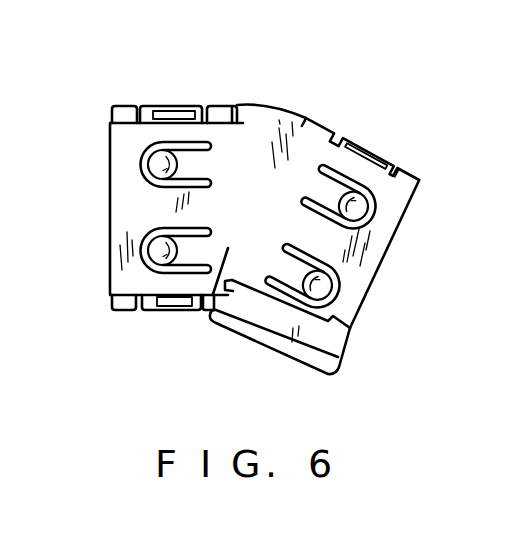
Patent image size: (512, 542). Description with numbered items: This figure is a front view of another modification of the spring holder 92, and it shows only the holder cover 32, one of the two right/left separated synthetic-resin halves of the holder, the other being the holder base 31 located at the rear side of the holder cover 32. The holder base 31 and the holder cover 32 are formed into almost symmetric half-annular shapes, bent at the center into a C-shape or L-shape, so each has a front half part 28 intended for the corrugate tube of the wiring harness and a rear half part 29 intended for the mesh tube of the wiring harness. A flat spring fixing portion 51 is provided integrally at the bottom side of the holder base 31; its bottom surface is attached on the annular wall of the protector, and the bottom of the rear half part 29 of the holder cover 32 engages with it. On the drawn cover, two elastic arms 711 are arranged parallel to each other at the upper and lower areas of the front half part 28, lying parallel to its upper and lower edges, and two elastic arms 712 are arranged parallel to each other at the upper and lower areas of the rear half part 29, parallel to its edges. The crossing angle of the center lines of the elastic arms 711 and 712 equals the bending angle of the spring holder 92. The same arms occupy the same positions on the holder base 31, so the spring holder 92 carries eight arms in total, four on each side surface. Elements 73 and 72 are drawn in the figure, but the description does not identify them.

The spring holder 92 is at (388, 46).
The front half part 28 is at (110, 136).
The rear half part 29 is at (412, 201).
The holder cover 32 is at (268, 106).
The holder base 31 is at (242, 331).
The flat spring fixing portion 51 is at (293, 330).
The notch hook 73 is at (213, 318).
The elastic arms 711 is at (197, 248).
The elastic arms 712 is at (319, 193).
The pins held in clips 72 is at (143, 244).